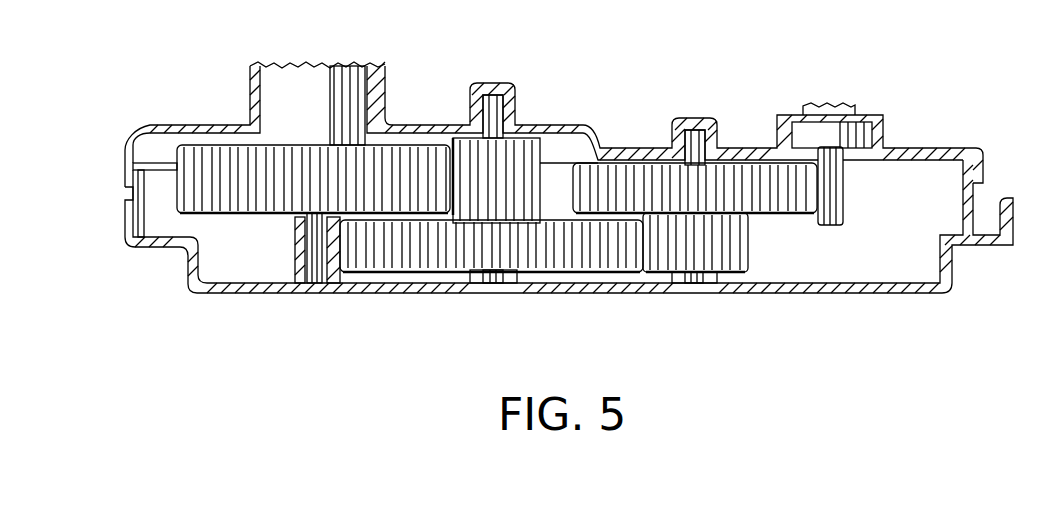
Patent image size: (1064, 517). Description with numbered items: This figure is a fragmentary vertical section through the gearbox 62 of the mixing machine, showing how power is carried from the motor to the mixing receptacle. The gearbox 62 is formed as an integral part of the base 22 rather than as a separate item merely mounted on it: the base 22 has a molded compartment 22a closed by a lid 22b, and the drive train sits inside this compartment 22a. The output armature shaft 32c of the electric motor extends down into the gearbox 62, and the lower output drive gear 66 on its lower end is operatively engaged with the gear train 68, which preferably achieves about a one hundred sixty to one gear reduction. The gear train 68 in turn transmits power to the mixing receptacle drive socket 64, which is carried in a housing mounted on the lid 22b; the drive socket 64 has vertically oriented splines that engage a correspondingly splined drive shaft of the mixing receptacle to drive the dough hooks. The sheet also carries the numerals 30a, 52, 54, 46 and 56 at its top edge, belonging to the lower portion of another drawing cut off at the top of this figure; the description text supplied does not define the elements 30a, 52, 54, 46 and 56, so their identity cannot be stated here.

The base 22 is at (586, 211).
The molded compartment 22a is at (866, 260).
The lid 22b is at (933, 150).
The gearbox 62 is at (538, 189).
The drive socket 64 is at (338, 72).
The lower output drive gear 66 is at (848, 190).
The gear train 68 is at (420, 147).
The output armature shaft 32c is at (848, 107).
The arm portion 30a is at (644, 22).
The spring 52 is at (917, 0).
The pin 54 is at (857, 0).
The lever 46 is at (970, 0).
The roller 56 is at (1005, 0).